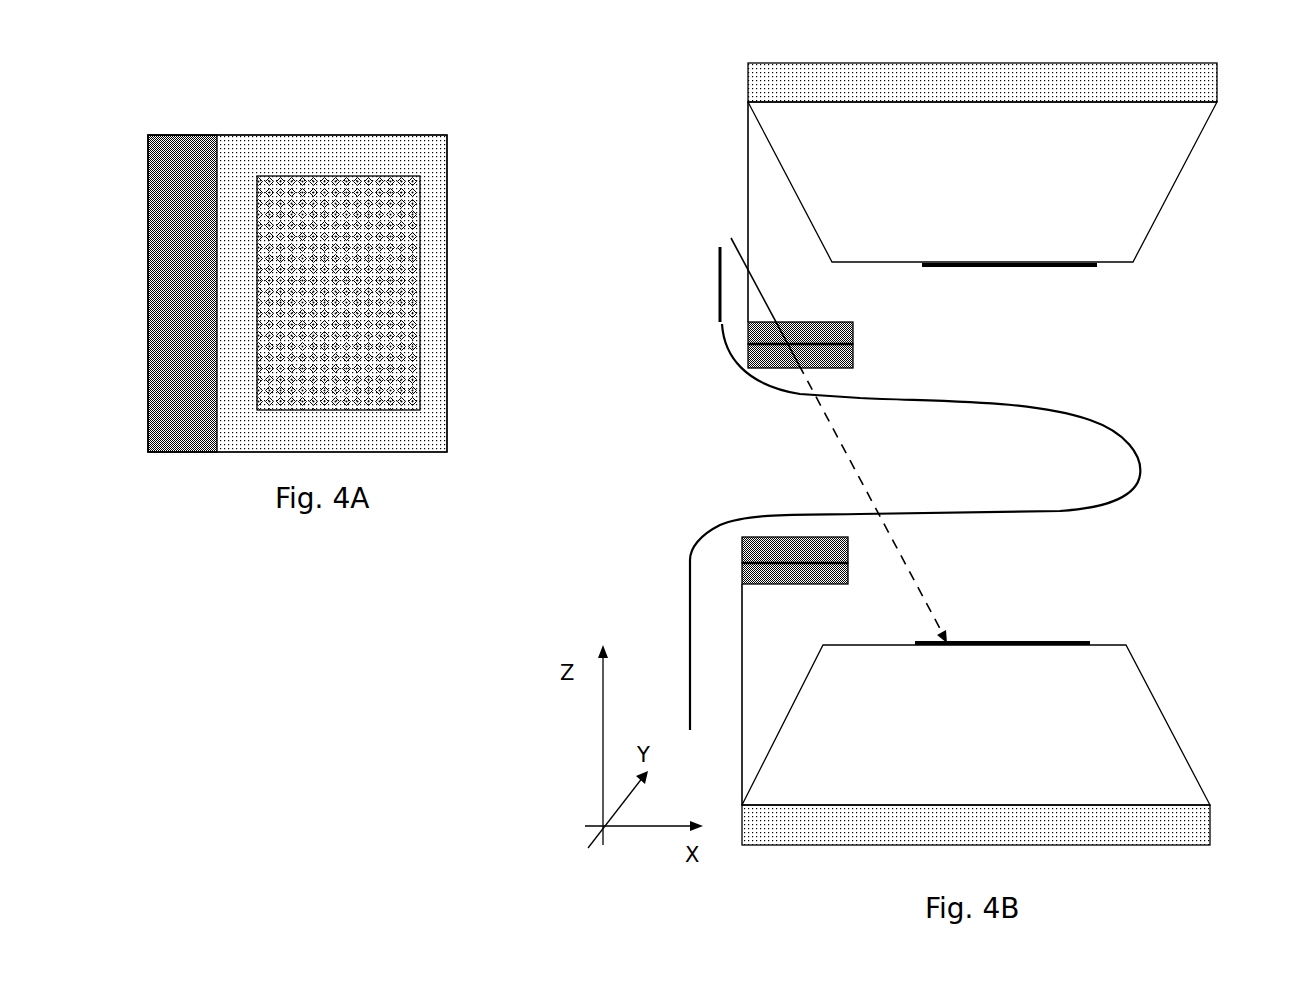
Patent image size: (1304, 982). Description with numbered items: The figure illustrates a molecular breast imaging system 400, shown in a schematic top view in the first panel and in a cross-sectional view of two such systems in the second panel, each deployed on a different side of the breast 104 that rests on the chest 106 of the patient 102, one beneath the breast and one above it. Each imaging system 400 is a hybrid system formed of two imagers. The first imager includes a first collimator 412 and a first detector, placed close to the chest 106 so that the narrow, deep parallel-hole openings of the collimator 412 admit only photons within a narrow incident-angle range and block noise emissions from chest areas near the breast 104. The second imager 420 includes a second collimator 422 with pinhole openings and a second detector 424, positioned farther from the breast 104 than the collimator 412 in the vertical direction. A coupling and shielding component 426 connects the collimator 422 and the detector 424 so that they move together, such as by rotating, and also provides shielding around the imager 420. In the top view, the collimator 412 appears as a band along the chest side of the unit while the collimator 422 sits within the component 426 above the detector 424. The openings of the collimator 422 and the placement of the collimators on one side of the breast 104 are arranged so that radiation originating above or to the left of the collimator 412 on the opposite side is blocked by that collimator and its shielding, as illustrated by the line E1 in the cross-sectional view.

In FIG. 4A, the molecular breast imaging (MBI) system 400 is at (307, 237).
In FIG. 4B, the molecular breast imaging (MBI) system 400 is at (992, 311).
In FIG. 4A, the first collimator 412 is at (175, 190).
In FIG. 4B, the imager 420 is at (1019, 744).
In FIG. 4A, the second collimator 422 is at (318, 208).
In FIG. 4B, the second collimator 422 is at (1050, 648).
In FIG. 4A, the second detector 424 is at (307, 274).
In FIG. 4A, the coupling and shielding component 426 is at (440, 312).
In FIG. 4B, the patient 102 is at (808, 488).
In FIG. 4B, the breast 104 is at (915, 442).
In FIG. 4B, the chest 106 is at (703, 310).
In FIG. 4B, the line E1 is at (831, 427).